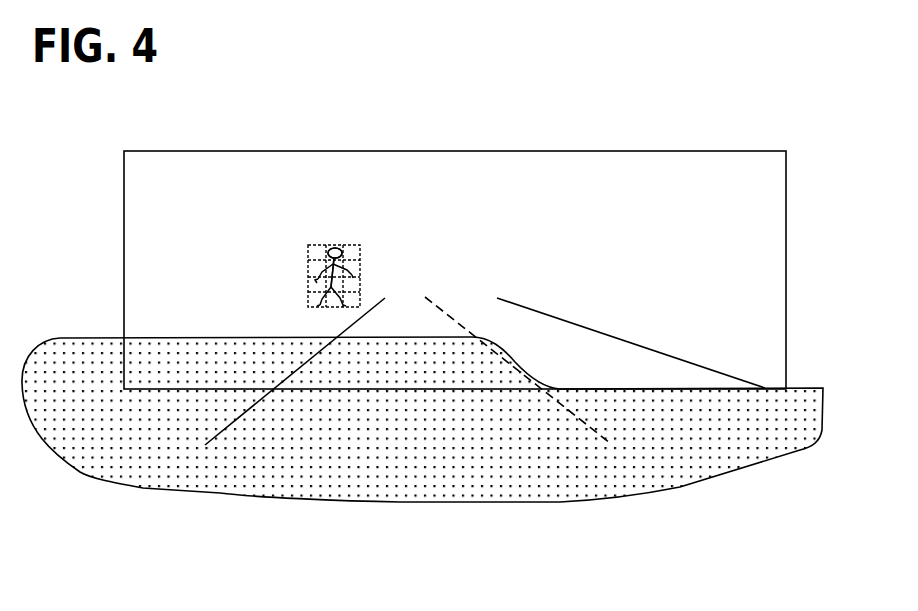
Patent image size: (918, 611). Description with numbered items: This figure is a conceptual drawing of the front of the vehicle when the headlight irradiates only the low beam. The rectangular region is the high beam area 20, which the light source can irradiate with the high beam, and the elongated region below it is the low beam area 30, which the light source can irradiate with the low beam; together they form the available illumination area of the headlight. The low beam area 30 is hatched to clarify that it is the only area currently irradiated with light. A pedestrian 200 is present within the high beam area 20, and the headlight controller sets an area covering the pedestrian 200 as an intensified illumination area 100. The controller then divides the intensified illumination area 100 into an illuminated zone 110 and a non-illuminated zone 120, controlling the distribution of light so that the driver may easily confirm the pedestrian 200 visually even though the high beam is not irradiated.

The high beam area 20 is at (684, 151).
The low beam area 30 is at (538, 503).
The intensified illumination area 100 is at (308, 278).
The illuminated zone 110 is at (328, 253).
The non-illuminated zone 120 is at (355, 253).
The pedestrian 200 is at (322, 262).